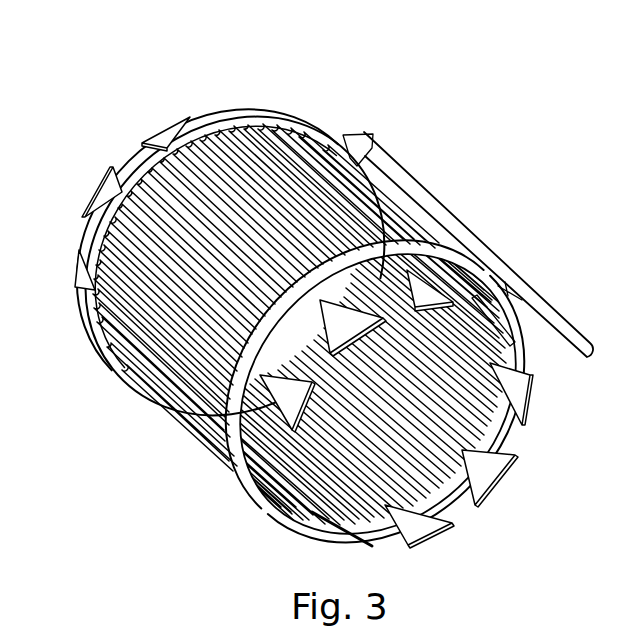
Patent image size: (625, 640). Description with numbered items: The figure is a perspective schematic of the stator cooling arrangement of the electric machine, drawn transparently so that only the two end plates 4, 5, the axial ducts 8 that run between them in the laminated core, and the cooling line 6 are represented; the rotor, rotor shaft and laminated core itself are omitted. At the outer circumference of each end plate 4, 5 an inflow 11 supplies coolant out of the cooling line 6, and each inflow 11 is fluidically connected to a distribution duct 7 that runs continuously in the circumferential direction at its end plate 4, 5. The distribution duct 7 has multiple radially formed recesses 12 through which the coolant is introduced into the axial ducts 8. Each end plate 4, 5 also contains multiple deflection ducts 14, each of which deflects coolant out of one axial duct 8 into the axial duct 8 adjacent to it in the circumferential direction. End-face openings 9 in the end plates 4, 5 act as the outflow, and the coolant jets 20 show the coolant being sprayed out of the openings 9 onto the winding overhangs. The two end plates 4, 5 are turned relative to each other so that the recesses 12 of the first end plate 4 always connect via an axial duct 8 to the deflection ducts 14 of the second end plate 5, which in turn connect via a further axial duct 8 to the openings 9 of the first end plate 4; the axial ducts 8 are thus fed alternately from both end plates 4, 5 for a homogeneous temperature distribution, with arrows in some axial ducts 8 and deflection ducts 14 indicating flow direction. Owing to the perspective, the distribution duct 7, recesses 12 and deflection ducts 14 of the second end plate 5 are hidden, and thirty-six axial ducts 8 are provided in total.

The first end plate 4 is at (206, 118).
The second end plate 5 is at (513, 358).
The cooling line 6 is at (465, 233).
The distribution duct 7 is at (270, 128).
The axial duct 8 is at (435, 430).
The end-face opening 9 is at (285, 134).
The inflow 11 is at (347, 135).
The recess 12 is at (190, 121).
The deflection duct 14 is at (253, 129).
The coolant jet 20 is at (170, 137).